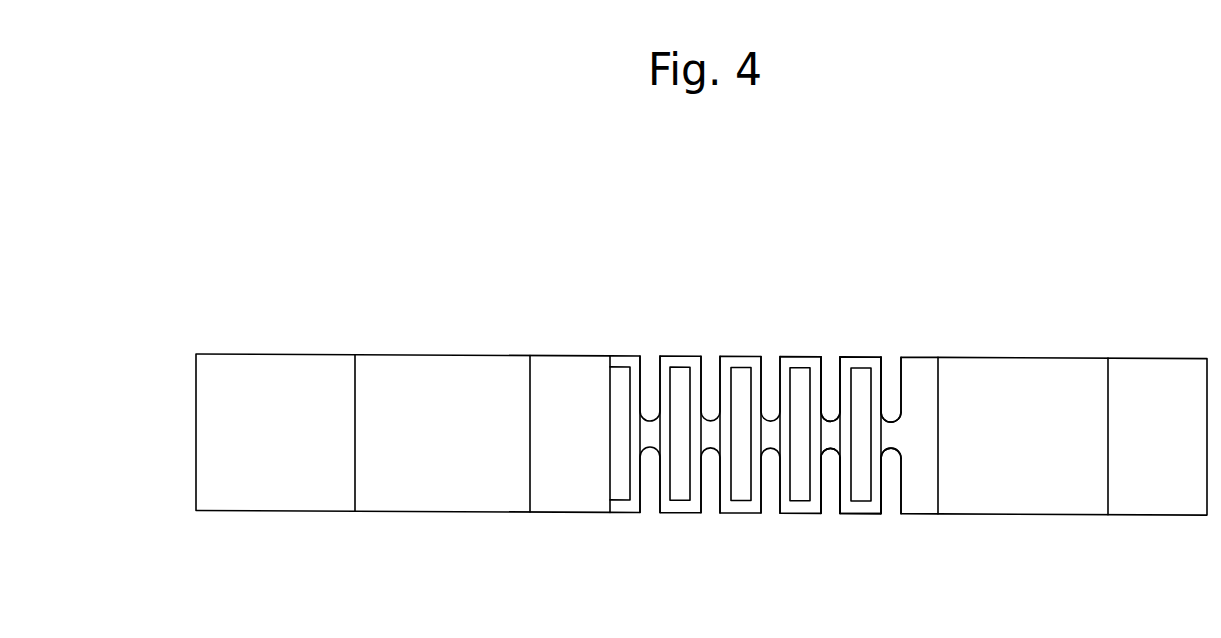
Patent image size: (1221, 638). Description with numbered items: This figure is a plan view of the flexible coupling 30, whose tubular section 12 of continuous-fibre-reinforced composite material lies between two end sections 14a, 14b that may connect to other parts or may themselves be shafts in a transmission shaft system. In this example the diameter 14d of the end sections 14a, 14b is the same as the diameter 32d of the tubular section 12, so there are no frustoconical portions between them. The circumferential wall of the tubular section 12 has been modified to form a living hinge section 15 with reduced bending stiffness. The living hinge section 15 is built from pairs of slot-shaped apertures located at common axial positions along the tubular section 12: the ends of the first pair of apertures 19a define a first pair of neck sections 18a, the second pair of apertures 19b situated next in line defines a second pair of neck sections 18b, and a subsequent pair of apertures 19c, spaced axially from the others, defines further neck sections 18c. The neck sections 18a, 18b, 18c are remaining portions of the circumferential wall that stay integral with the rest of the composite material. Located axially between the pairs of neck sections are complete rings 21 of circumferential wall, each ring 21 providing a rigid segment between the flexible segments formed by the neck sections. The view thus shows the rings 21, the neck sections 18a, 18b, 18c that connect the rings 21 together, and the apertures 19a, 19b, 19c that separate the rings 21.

The flexible coupling 30 is at (1018, 204).
The tubular section 12 is at (789, 266).
The end section 14a is at (570, 295).
The end section 14b is at (1208, 295).
The diameter of the end sections 14d is at (354, 553).
The diameter of the tubular section 32d is at (621, 553).
The living hinge section 15 is at (903, 592).
The first pair of neck sections 18a is at (893, 433).
The second pair of neck sections 18b is at (862, 492).
The neck sections 18c is at (832, 435).
The first pair of slot-shaped apertures 19a is at (893, 385).
The second pair of slot-shaped apertures 19b is at (855, 490).
The subsequent pair of apertures 19c is at (831, 378).
The ring 21 is at (846, 358).